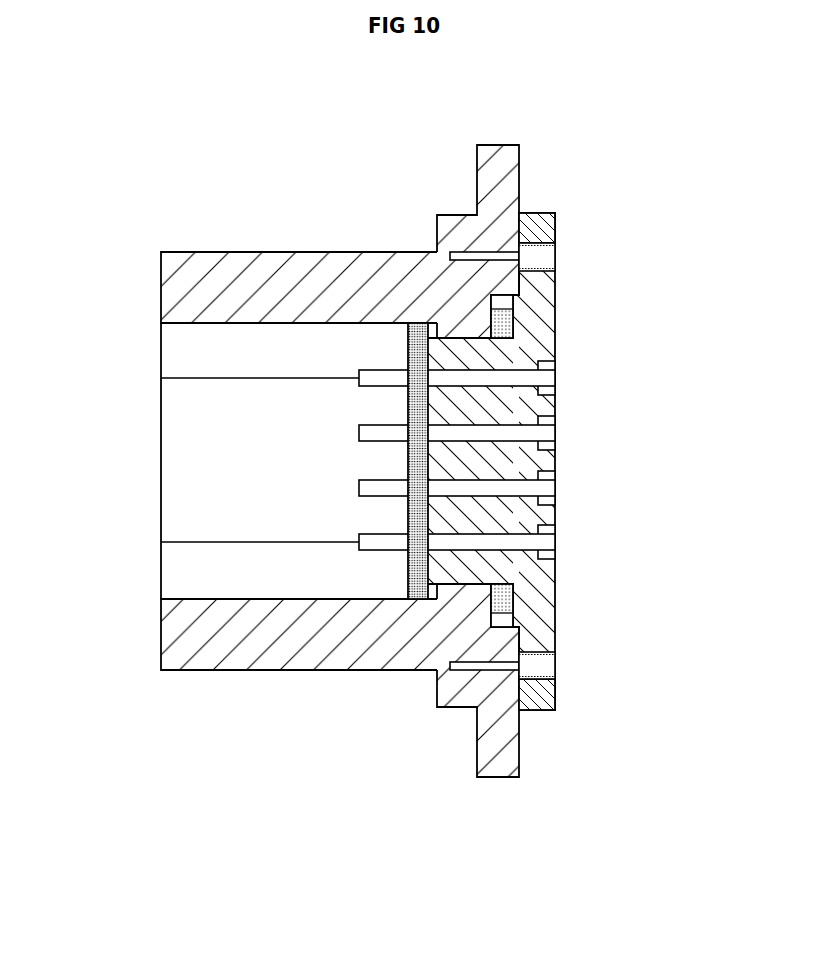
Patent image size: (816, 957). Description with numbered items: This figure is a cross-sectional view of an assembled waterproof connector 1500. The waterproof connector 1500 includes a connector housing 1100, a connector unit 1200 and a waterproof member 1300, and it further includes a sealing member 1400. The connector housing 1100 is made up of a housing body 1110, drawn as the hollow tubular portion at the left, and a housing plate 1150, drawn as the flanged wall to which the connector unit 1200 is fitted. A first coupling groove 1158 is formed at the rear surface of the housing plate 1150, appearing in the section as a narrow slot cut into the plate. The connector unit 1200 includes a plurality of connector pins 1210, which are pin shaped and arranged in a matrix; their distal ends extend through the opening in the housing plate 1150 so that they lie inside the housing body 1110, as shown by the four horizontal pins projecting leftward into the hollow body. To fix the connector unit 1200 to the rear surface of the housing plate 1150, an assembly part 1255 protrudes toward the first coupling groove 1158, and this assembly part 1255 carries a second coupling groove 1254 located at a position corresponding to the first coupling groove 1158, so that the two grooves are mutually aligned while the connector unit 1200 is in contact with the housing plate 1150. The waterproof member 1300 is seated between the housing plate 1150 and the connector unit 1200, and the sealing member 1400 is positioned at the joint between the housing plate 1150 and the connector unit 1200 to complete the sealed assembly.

The waterproof connector 1500 is at (259, 209).
The connector housing 1100 is at (340, 528).
The housing body 1110 is at (324, 670).
The housing plate 1150 is at (428, 503).
The first coupling groove 1158 is at (467, 252).
The connector unit 1200 is at (595, 411).
The connector pin 1210 is at (553, 436).
The second coupling groove 1254 is at (541, 252).
The assembly part 1255 is at (543, 222).
The waterproof member 1300 is at (397, 572).
The sealing member 1400 is at (522, 603).